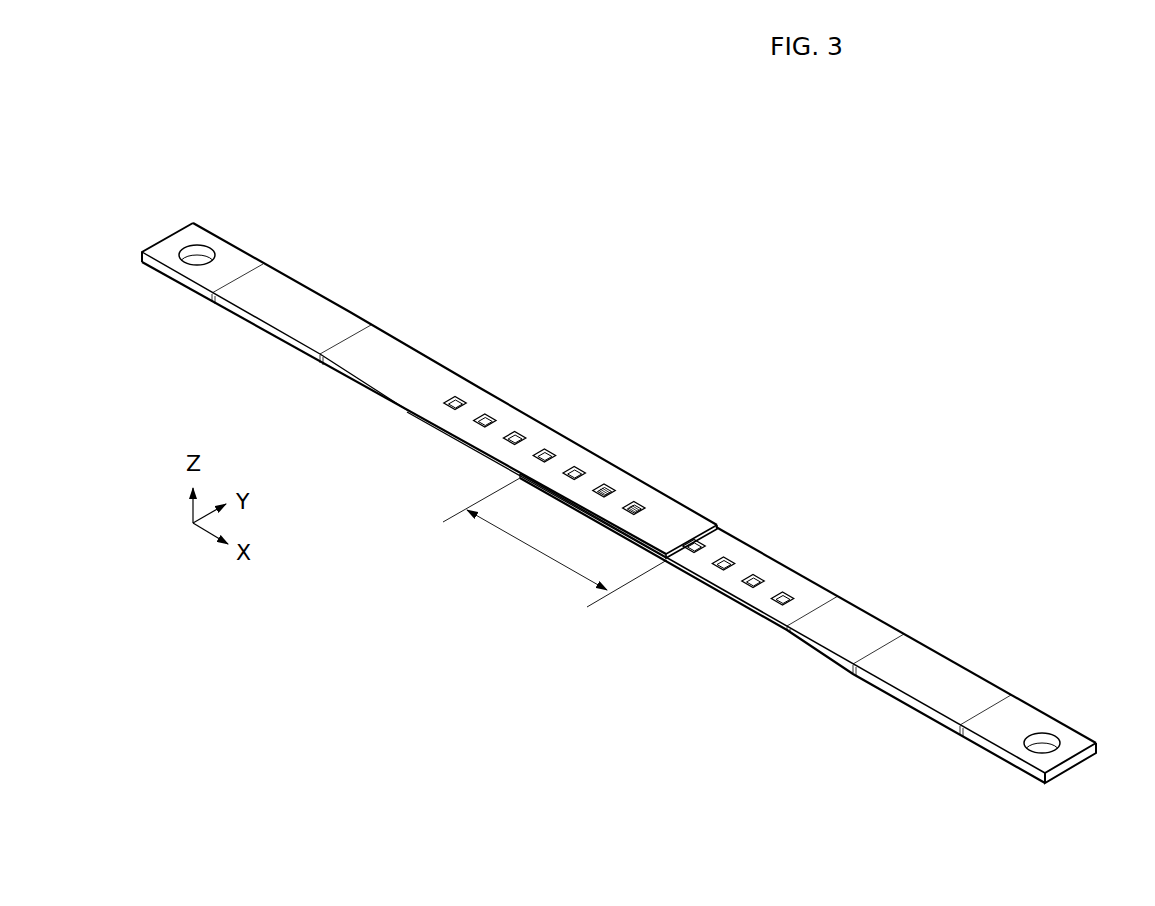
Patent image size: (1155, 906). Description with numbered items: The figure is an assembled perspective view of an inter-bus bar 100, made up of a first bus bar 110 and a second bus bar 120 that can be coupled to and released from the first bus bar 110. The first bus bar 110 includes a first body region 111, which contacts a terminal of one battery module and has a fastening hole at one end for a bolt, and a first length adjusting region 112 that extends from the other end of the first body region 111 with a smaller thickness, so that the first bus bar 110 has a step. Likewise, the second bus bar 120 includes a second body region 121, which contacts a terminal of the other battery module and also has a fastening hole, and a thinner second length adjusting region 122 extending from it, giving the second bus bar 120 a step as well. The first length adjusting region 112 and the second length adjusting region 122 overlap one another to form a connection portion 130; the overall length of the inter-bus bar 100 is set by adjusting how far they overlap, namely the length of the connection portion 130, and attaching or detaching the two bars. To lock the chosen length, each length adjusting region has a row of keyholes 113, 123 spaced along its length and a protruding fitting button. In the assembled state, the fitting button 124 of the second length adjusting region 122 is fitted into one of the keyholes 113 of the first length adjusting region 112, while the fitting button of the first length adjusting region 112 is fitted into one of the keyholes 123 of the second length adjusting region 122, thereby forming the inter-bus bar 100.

The inter-bus bar 100 is at (1033, 267).
The first bus bar 110 is at (429, 304).
The first body region 111 is at (274, 281).
The first length adjusting region 112 is at (568, 450).
The keyholes 113 is at (458, 402).
The second bus bar 120 is at (897, 579).
The second body region 121 is at (933, 660).
The second length adjusting region 122 is at (763, 607).
The keyholes 123 is at (718, 571).
The fitting button 124 is at (578, 467).
The connection portion 130 is at (555, 542).